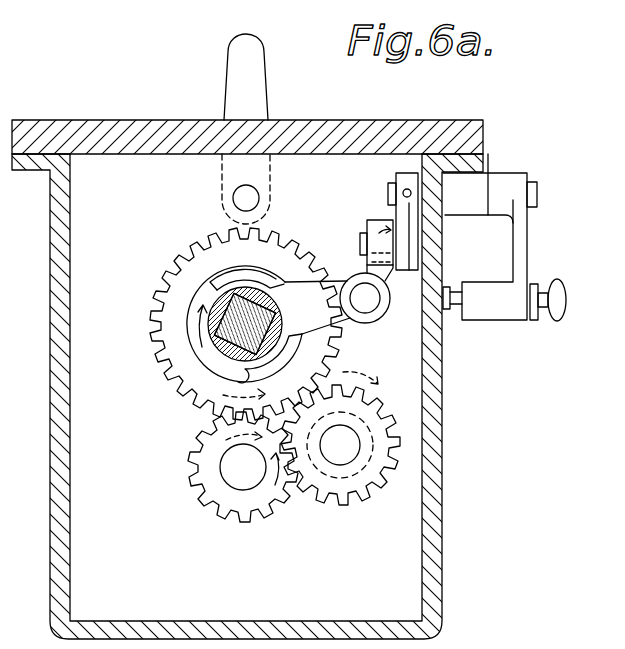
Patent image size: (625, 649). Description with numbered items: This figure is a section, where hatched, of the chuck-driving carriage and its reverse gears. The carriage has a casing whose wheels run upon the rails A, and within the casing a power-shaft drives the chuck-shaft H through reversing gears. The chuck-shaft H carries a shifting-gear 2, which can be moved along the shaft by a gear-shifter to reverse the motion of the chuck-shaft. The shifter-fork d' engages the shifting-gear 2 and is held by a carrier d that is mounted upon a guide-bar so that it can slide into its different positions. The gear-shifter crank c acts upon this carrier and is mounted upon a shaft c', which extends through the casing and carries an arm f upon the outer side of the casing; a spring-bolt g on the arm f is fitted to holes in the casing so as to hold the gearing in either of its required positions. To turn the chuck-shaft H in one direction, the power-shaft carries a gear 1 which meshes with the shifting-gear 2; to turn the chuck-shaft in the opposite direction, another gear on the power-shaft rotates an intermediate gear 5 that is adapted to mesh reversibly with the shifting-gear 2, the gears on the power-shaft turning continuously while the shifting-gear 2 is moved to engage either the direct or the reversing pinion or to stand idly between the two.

The rails A is at (50, 233).
The chuck-shaft H is at (212, 326).
The shifter-fork d' is at (268, 324).
The carrier d is at (361, 259).
The gear-shifter crank c is at (372, 225).
The shaft c' is at (376, 215).
The arm f is at (518, 243).
The spring-bolt g is at (457, 308).
The gear 1 is at (240, 522).
The shifting-gear 2 is at (335, 360).
The gear 5 is at (335, 510).